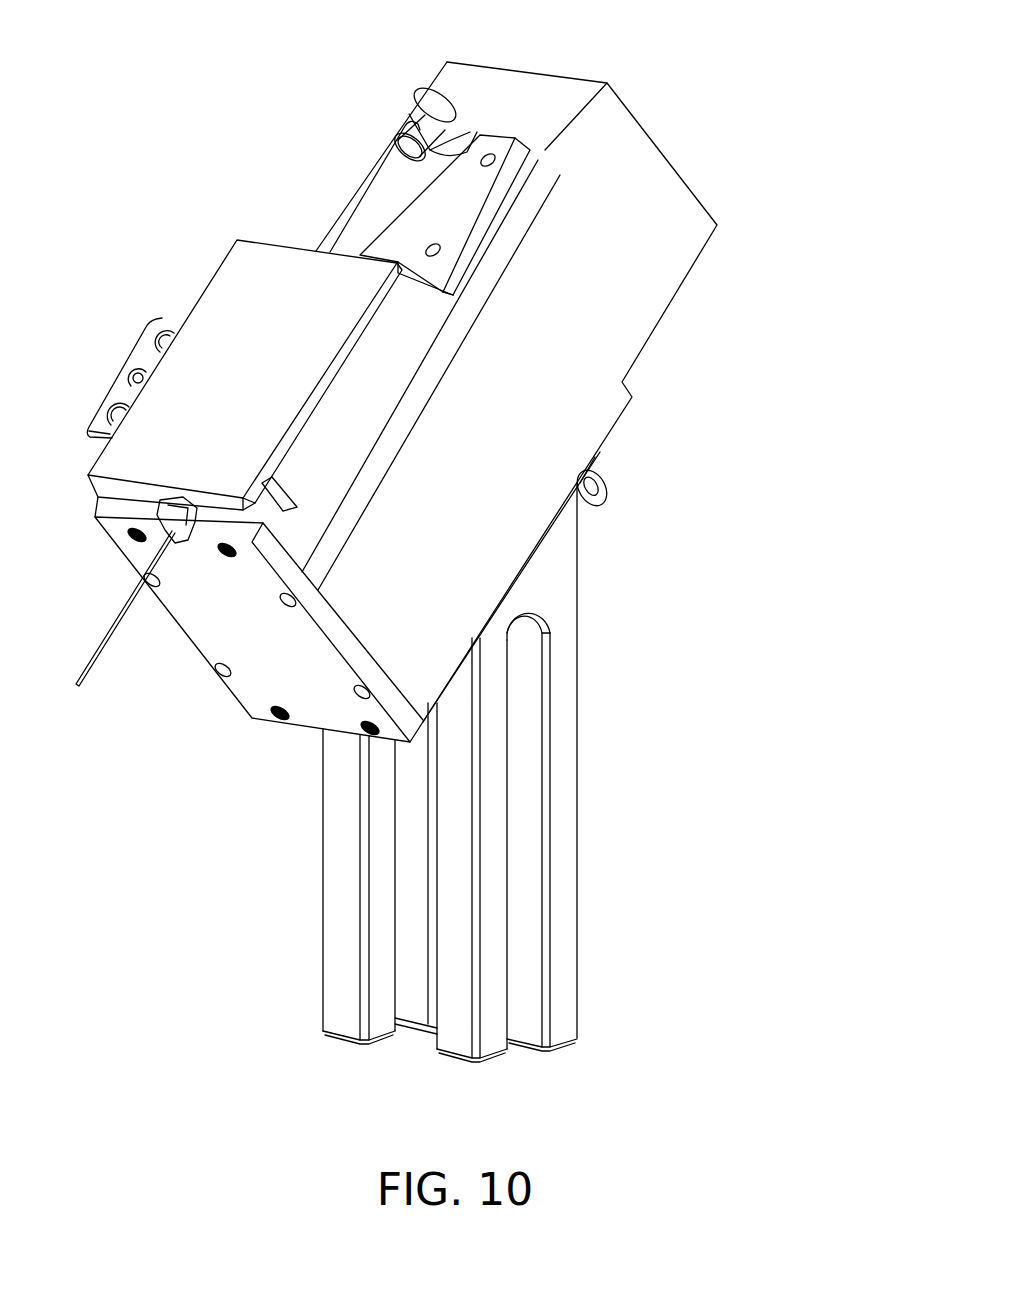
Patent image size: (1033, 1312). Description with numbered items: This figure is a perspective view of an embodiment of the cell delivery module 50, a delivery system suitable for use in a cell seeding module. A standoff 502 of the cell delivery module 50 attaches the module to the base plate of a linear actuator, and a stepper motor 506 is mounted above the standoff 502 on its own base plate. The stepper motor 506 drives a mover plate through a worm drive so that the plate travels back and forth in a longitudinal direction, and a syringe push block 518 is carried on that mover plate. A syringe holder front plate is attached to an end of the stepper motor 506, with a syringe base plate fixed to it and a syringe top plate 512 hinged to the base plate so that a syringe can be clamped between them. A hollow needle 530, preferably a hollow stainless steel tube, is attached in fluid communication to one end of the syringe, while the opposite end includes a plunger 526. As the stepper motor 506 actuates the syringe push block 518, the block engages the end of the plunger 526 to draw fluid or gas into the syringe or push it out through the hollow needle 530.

The cell delivery module 50 is at (733, 398).
The standoff 502 is at (565, 884).
The stepper motor 506 is at (565, 268).
The syringe top plate 512 is at (222, 376).
The syringe push block 518 is at (440, 100).
The plunger 526 is at (383, 195).
The hollow needle 530 is at (117, 615).